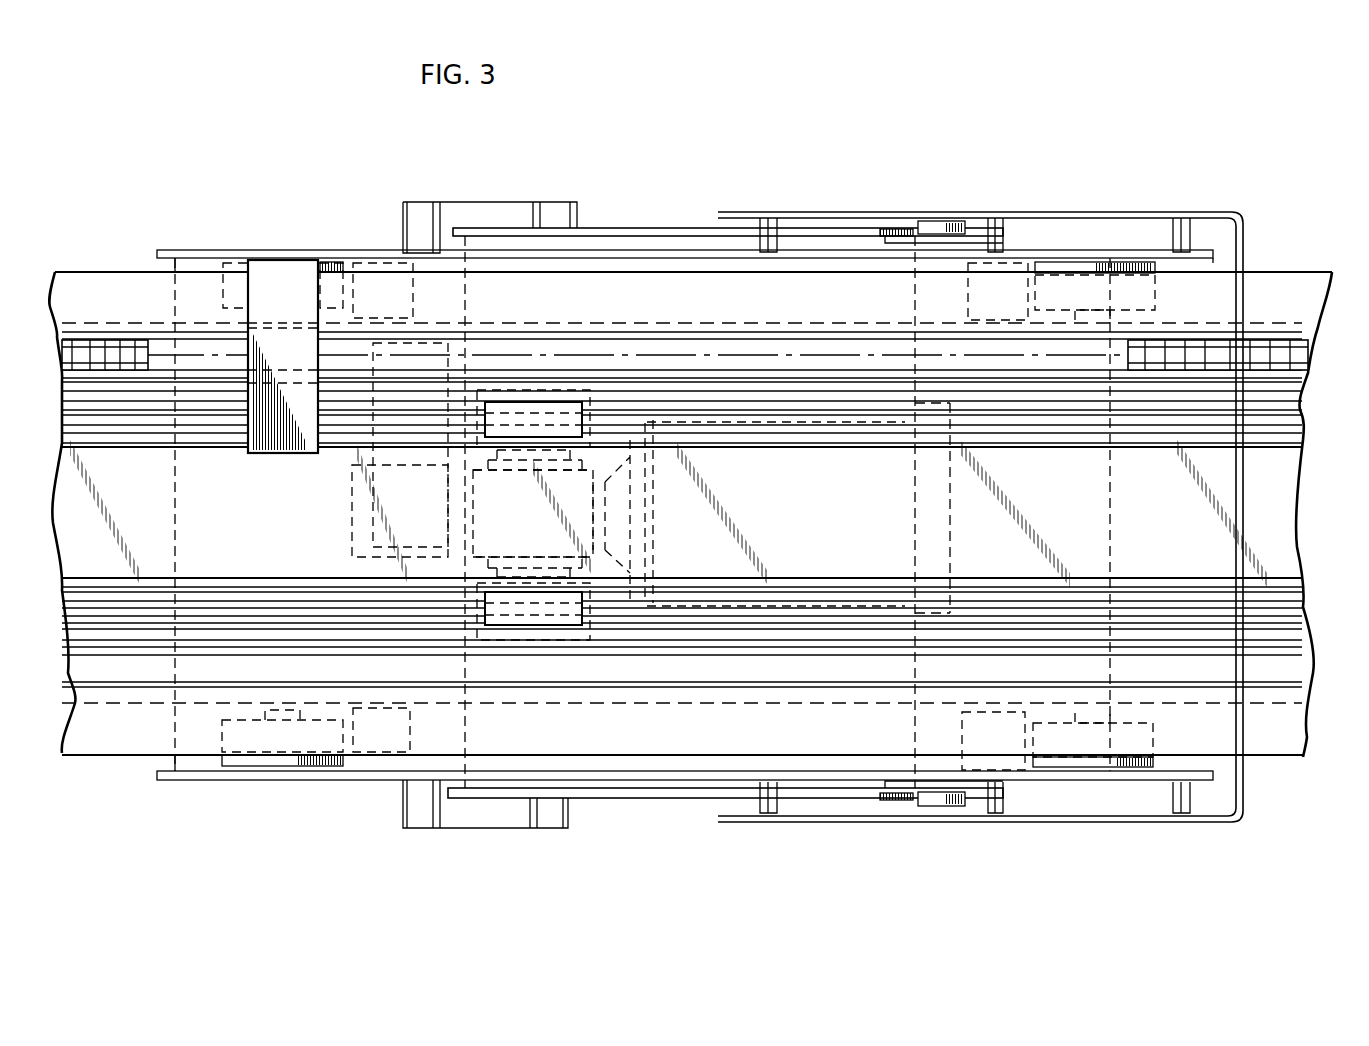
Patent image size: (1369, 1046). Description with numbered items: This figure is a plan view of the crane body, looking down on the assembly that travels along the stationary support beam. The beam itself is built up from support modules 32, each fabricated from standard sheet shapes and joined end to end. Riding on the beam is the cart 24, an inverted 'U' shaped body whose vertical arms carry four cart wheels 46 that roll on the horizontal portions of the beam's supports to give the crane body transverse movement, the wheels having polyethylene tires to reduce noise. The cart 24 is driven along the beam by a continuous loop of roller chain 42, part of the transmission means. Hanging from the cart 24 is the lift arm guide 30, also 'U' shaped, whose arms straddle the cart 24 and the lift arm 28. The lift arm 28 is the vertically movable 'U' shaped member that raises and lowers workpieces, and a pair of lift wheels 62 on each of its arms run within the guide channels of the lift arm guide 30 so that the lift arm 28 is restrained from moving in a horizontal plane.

The cart 24 is at (228, 252).
The lift arm 28 is at (818, 232).
The lift arm guide 30 is at (1243, 553).
The support module 32 is at (80, 283).
The roller chain 42 is at (60, 345).
The cart wheel 46 is at (333, 262).
The lift wheel 62 is at (947, 224).